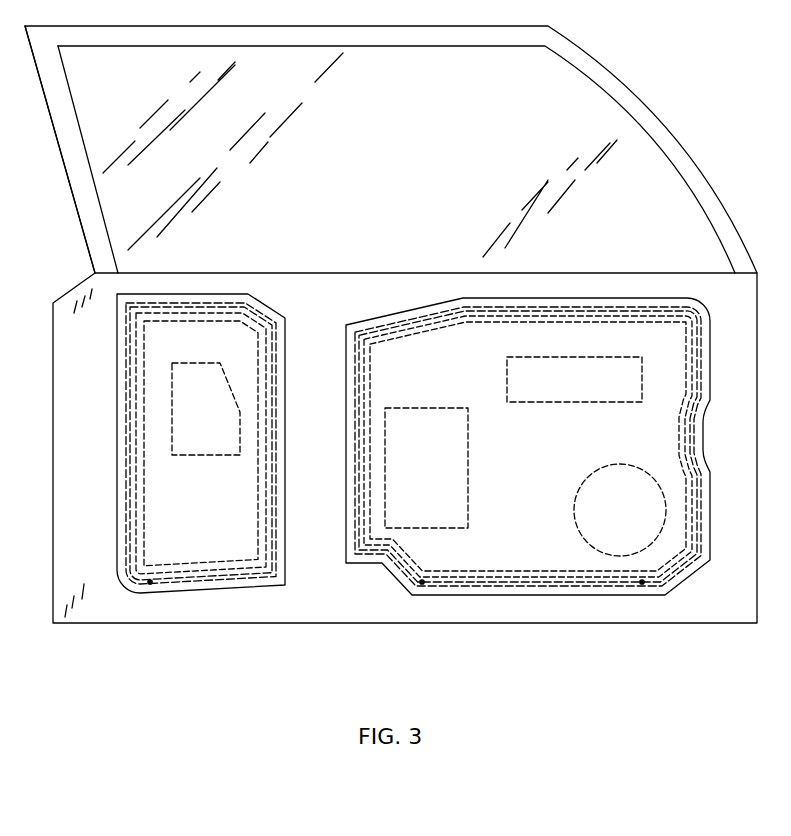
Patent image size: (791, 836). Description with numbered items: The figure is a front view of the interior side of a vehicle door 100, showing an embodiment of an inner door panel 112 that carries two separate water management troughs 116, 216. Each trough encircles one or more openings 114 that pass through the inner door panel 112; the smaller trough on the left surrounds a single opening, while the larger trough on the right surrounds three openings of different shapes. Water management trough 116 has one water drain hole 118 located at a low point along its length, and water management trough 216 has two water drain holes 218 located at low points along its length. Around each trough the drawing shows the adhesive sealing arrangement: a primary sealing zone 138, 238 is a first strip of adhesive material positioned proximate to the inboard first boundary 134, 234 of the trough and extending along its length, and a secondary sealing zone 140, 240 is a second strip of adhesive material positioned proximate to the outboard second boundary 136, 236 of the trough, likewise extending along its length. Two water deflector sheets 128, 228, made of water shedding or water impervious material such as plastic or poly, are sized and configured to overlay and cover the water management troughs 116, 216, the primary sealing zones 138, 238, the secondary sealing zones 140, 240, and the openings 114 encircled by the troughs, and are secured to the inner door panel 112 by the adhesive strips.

The vehicle door 100 is at (78, 642).
The inner door panel 112 is at (98, 357).
The openings 114 is at (216, 417).
The water management trough 116 is at (128, 500).
The water drain hole 118 is at (150, 583).
The water deflector sheet 128 is at (207, 505).
The first boundary 134 is at (188, 318).
The second boundary 136 is at (145, 306).
The primary sealing zone 138 is at (228, 322).
The secondary sealing zone 140 is at (206, 308).
The water management trough 216 is at (698, 310).
The water drain holes 218 is at (422, 584).
The water deflector sheet 228 is at (538, 455).
The first boundary 234 is at (432, 328).
The second boundary 236 is at (440, 317).
The primary sealing zone 238 is at (490, 323).
The secondary sealing zone 240 is at (508, 312).